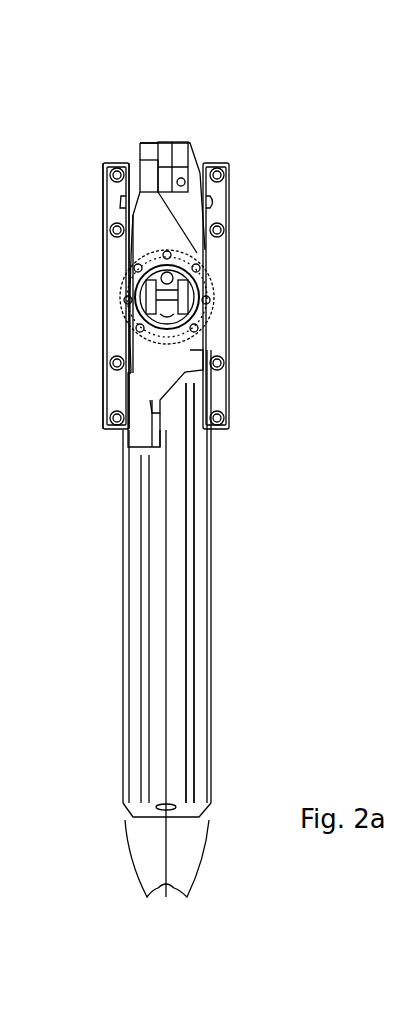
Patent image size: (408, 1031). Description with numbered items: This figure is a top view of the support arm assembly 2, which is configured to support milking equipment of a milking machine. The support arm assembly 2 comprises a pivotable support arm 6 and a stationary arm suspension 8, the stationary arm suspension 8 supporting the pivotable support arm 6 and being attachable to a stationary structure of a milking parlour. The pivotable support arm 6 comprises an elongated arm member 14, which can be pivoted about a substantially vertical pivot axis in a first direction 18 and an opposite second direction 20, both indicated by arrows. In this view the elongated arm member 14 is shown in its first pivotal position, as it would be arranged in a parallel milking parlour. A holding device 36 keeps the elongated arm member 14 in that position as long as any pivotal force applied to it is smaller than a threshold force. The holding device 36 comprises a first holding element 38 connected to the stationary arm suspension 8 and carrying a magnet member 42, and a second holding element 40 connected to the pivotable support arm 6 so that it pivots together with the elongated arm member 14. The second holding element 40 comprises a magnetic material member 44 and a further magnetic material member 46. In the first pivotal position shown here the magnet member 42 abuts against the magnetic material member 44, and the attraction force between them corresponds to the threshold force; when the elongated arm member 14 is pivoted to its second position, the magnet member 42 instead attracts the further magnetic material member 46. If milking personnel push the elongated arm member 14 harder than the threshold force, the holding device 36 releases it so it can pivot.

The support arm assembly 2 is at (292, 176).
The pivotable support arm 6 is at (135, 500).
The stationary arm suspension 8 is at (197, 172).
The elongated arm member 14 is at (200, 638).
The first direction 18 is at (87, 280).
The second direction 20 is at (407, 240).
The holding device 36 is at (142, 63).
The first holding element 38 is at (166, 142).
The second holding element 40 is at (143, 230).
The magnet member 42 is at (167, 185).
The magnetic material member 44 is at (157, 163).
The further magnetic material member 46 is at (157, 430).